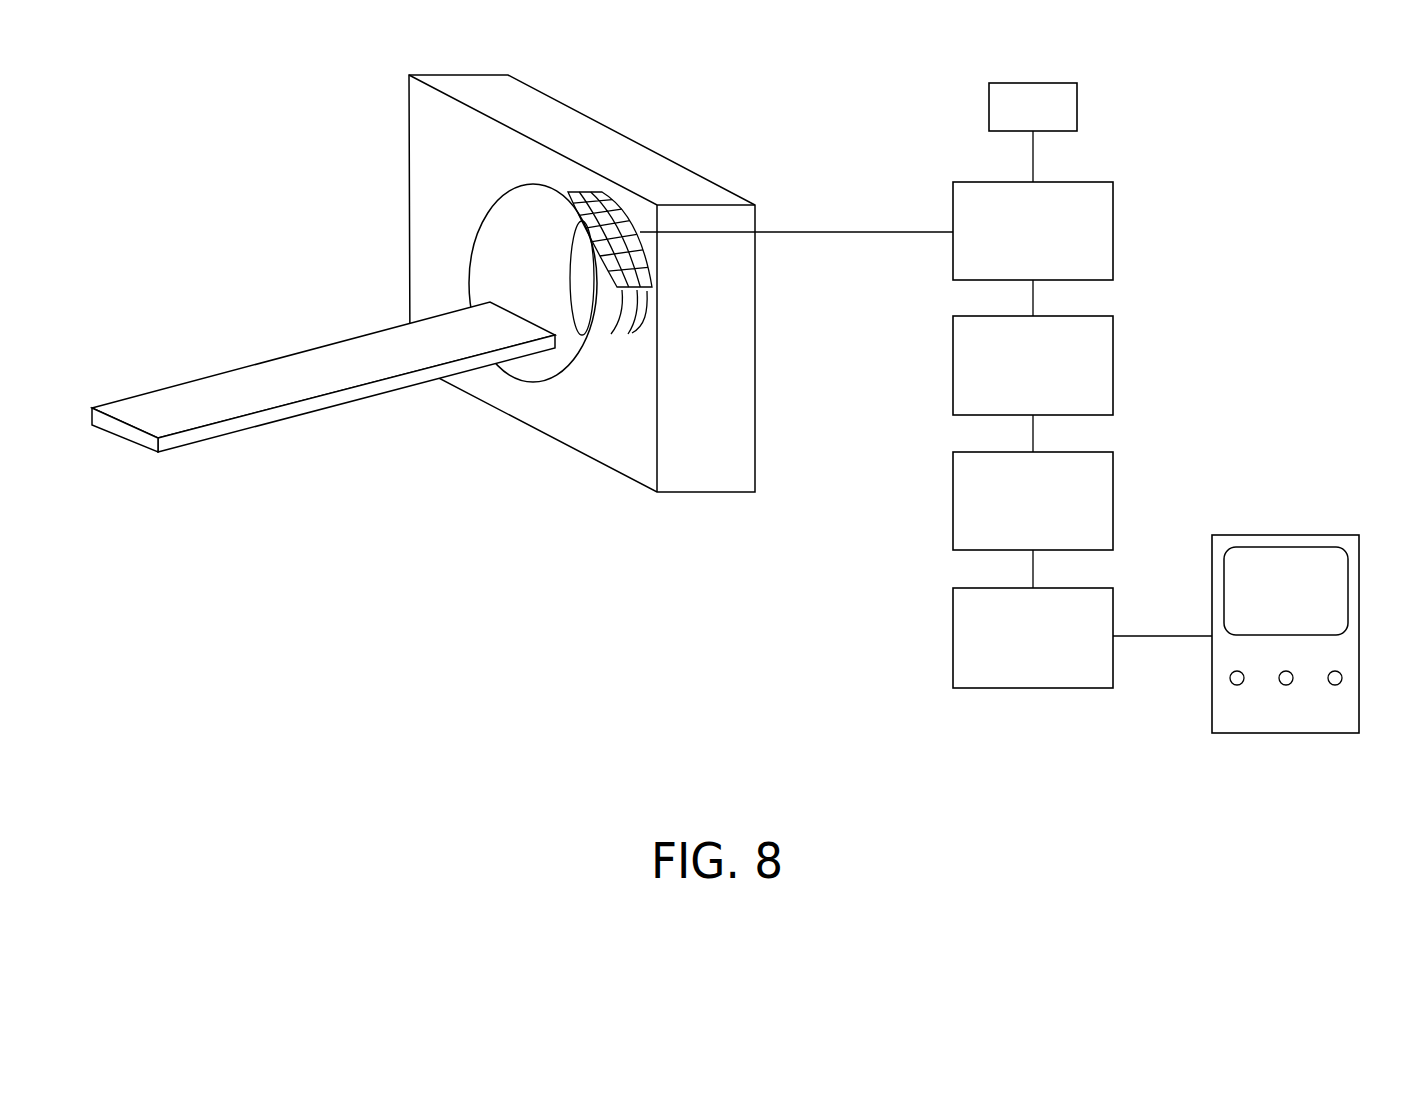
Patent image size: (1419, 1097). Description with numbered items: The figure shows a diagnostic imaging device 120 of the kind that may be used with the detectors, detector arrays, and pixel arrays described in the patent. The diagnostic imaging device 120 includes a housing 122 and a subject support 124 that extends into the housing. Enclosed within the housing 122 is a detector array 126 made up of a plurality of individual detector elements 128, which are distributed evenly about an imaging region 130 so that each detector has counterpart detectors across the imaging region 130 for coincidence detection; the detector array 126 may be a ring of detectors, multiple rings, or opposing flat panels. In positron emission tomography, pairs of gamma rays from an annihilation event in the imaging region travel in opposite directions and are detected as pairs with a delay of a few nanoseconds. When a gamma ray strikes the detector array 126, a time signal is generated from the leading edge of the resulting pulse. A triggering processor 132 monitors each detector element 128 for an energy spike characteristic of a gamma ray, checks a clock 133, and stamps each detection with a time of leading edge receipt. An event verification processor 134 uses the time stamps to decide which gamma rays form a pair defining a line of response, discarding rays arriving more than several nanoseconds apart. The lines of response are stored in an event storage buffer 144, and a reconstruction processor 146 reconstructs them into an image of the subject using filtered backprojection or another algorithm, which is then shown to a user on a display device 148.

The diagnostic imaging device 120 is at (599, 288).
The housing 122 is at (706, 493).
The subject support 124 is at (250, 430).
The detector array 126 is at (637, 223).
The detector elements 128 is at (620, 327).
The imaging region 130 is at (508, 272).
The triggering processor 132 is at (953, 255).
The clock 133 is at (989, 94).
The event verification processor 134 is at (953, 386).
The event storage buffer 144 is at (953, 520).
The reconstruction processor 146 is at (953, 657).
The display device 148 is at (1212, 684).